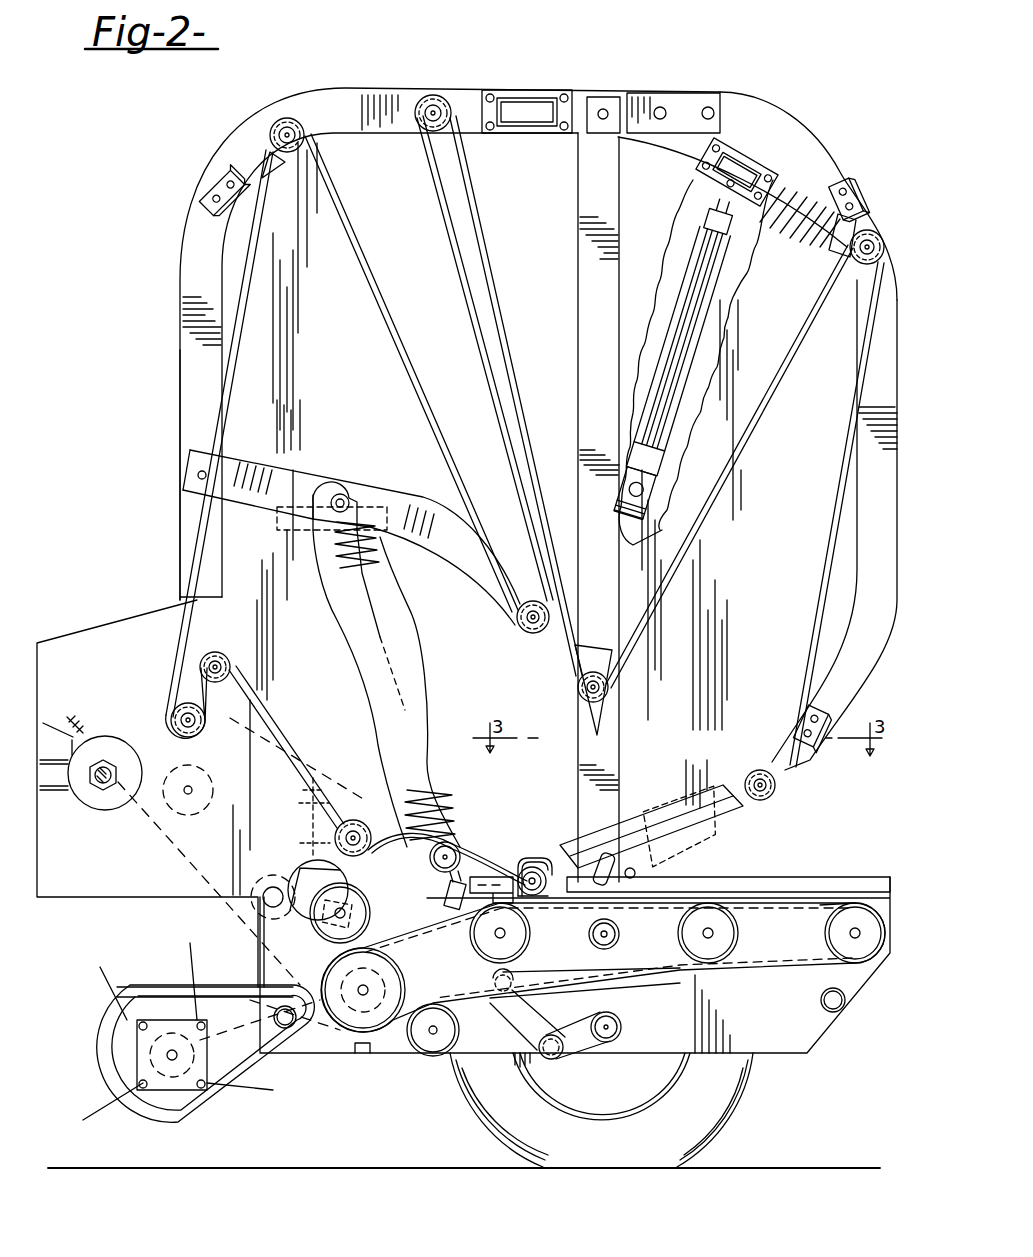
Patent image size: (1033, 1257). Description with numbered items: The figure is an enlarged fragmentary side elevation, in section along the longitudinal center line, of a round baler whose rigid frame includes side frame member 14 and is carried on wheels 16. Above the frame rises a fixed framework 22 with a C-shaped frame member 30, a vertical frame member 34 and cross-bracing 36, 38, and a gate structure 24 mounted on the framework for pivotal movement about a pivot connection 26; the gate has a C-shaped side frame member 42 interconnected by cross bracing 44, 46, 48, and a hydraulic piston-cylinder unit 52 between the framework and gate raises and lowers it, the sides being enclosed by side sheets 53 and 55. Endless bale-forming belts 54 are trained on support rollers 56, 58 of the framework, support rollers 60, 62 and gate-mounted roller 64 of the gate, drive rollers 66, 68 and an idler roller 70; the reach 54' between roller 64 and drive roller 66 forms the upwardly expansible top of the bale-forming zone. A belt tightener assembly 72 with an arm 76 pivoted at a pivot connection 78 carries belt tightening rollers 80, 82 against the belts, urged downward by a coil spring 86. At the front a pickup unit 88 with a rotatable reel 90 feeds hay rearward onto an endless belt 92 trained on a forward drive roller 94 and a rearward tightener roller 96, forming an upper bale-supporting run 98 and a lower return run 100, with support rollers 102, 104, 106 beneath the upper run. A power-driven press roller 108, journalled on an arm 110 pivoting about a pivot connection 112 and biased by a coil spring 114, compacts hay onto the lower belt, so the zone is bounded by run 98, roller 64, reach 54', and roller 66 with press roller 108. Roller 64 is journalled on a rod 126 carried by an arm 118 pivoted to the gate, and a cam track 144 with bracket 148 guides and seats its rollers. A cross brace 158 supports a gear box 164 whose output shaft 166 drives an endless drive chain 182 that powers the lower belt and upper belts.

The side frame member 14 is at (778, 1034).
The wheels 16 is at (745, 1062).
The fixed framework 22 is at (178, 268).
The gate structure 24 is at (832, 140).
The pivot connection 26 is at (603, 108).
The C-shaped frame member 30 is at (188, 372).
The vertical frame member 34 is at (588, 263).
The cross-bracing 36 is at (210, 203).
The cross-bracing 38 is at (520, 95).
The C-shaped side frame member 42 is at (870, 546).
The cross bracing 44 is at (743, 160).
The cross bracing 46 is at (856, 187).
The cross bracing 48 is at (802, 715).
The hydraulic piston-cylinder unit 52 is at (712, 270).
The side sheets 53 is at (346, 396).
The bale-forming belts 54 is at (324, 436).
The belt reach 54' is at (447, 843).
The side sheets 55 is at (800, 466).
The support roller 56 is at (285, 117).
The support roller 58 is at (433, 94).
The support roller 60 is at (876, 232).
The support roller 62 is at (758, 770).
The gate-mounted roller 64 is at (536, 852).
The drive roller 66 is at (356, 820).
The drive roller 68 is at (203, 733).
The idler roller 70 is at (216, 651).
The belt tightener assembly 72 is at (416, 485).
The arm 76 is at (315, 480).
The pivot connection 78 is at (196, 468).
The belt tightening roller 80 is at (519, 628).
The belt tightening roller 82 is at (583, 700).
The coil spring 86 is at (338, 548).
The pickup unit 88 is at (102, 1068).
The reel 90 is at (158, 1030).
The endless belt 92 is at (670, 908).
The drive roller 94 is at (408, 988).
The tightener roller 96 is at (828, 925).
The upper bale-supporting run 98 is at (826, 900).
The lower return run 100 is at (663, 990).
The support roller 102 is at (555, 930).
The support roller 104 is at (592, 940).
The support roller 106 is at (738, 945).
The press roller 108 is at (390, 905).
The arm 110 is at (305, 870).
The pivot connection 112 is at (262, 890).
The coil spring 114 is at (308, 822).
The arm 118 is at (640, 822).
The rod 126 is at (546, 872).
The cam track 144 is at (782, 876).
The bracket 148 is at (460, 862).
The cross brace 158 is at (58, 728).
The gear box 164 is at (128, 752).
The output shaft 166 is at (106, 785).
The drive chain 182 is at (168, 866).